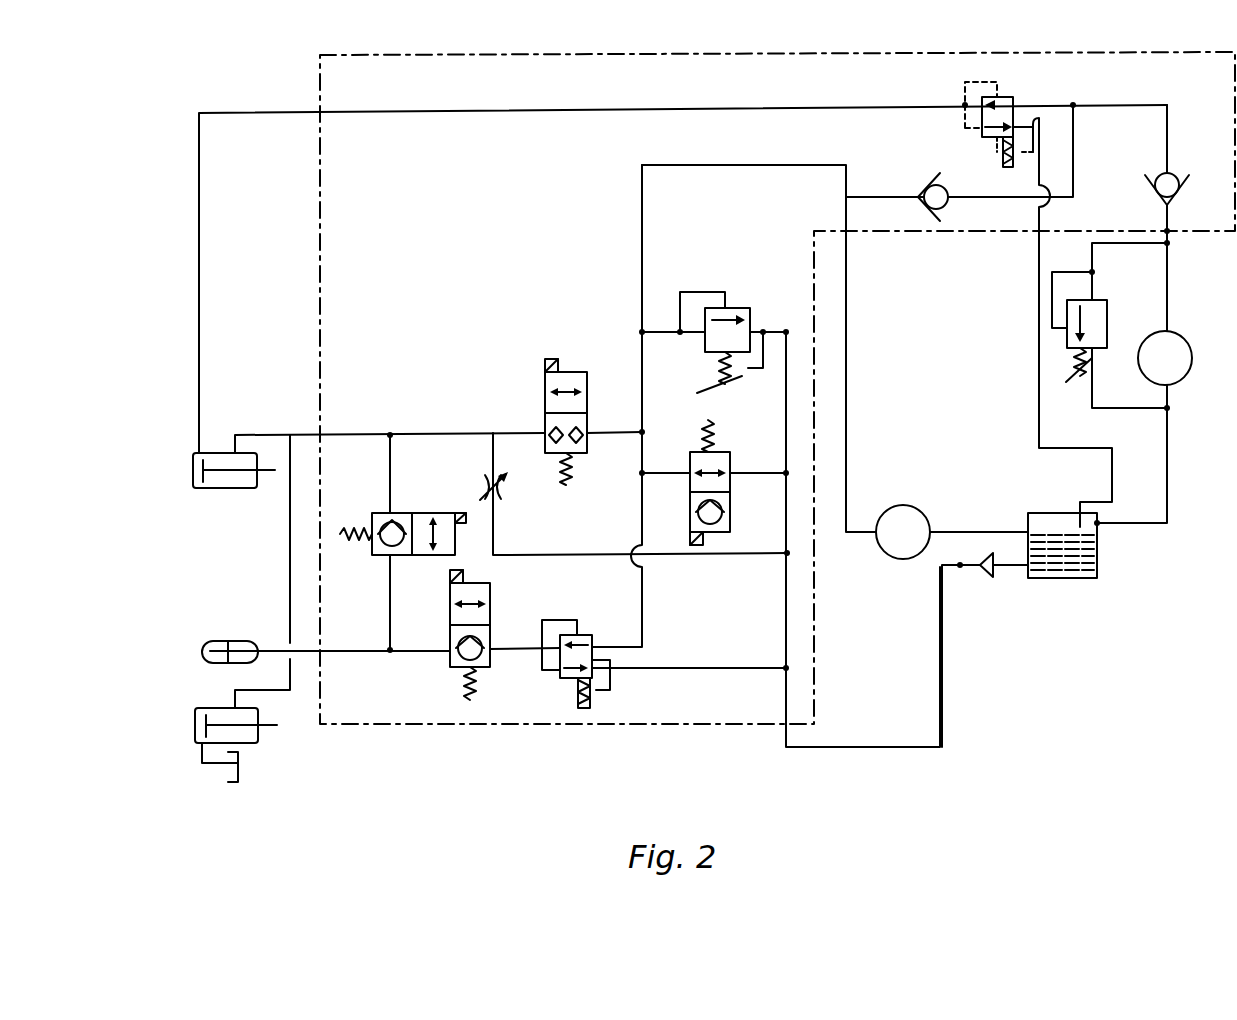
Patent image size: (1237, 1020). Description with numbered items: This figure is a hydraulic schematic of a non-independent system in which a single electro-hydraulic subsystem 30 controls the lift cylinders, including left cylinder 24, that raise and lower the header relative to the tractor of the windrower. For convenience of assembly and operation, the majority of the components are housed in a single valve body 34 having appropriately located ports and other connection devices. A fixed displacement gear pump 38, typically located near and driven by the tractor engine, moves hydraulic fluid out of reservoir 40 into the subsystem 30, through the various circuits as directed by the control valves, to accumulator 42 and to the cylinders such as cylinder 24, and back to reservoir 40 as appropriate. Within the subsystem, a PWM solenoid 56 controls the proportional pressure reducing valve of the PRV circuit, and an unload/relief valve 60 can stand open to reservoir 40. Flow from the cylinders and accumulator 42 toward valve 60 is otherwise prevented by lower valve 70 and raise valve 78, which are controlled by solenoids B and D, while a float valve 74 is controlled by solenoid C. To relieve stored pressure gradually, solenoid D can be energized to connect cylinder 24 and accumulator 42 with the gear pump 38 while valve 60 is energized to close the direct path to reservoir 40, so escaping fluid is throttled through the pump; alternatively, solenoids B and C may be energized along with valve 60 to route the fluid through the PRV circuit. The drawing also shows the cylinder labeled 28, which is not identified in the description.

The left cylinder 24 is at (258, 730).
The actuator cylinder 28 is at (222, 489).
The electro-hydraulic subsystem 30 is at (524, 356).
The valve body 34 is at (665, 726).
The fixed displacement gear pump 38 is at (900, 560).
The reservoir 40 is at (1078, 580).
The accumulator 42 is at (237, 641).
The PWM solenoid 56 is at (592, 698).
The unload/relief valve 60 is at (730, 470).
The lower valve 70 is at (492, 598).
The float valve 74 is at (380, 556).
The raise valve 78 is at (587, 450).
The solenoid B is at (455, 577).
The solenoid C is at (460, 512).
The solenoid D is at (560, 366).